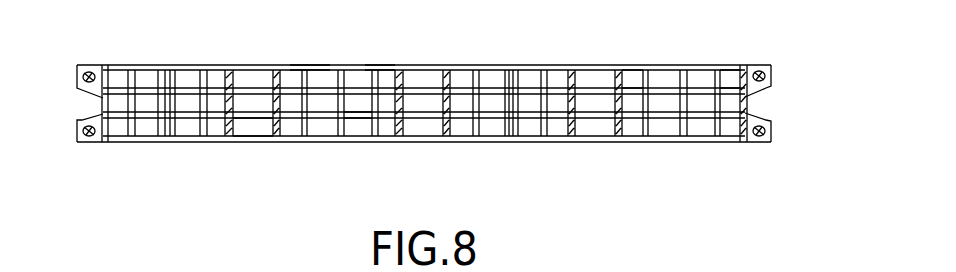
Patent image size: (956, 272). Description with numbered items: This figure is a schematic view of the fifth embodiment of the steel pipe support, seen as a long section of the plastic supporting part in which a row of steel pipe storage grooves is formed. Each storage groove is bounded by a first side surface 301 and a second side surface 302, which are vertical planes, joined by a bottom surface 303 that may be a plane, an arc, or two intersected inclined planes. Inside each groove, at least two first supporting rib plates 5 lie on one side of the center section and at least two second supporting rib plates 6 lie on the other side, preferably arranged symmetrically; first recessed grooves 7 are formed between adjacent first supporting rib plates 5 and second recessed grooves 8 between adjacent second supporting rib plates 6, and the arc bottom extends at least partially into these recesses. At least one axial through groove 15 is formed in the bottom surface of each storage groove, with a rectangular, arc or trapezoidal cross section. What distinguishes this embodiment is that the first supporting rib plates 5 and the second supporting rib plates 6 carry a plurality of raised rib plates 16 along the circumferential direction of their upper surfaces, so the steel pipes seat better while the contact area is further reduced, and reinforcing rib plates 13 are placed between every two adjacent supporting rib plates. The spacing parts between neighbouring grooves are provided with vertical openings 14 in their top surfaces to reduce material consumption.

The first supporting rib plates 5 is at (295, 123).
The second supporting rib plates 6 is at (353, 117).
The first recessed grooves 7 is at (293, 78).
The second recessed grooves 8 is at (387, 125).
The reinforcing rib plates 13 is at (305, 65).
The vertical openings 14 is at (257, 125).
The axial through groove 15 is at (342, 66).
The raised rib plates 16 is at (476, 67).
The first side surface 301 is at (636, 76).
The second side surface 302 is at (730, 68).
The bottom surface 303 is at (687, 68).